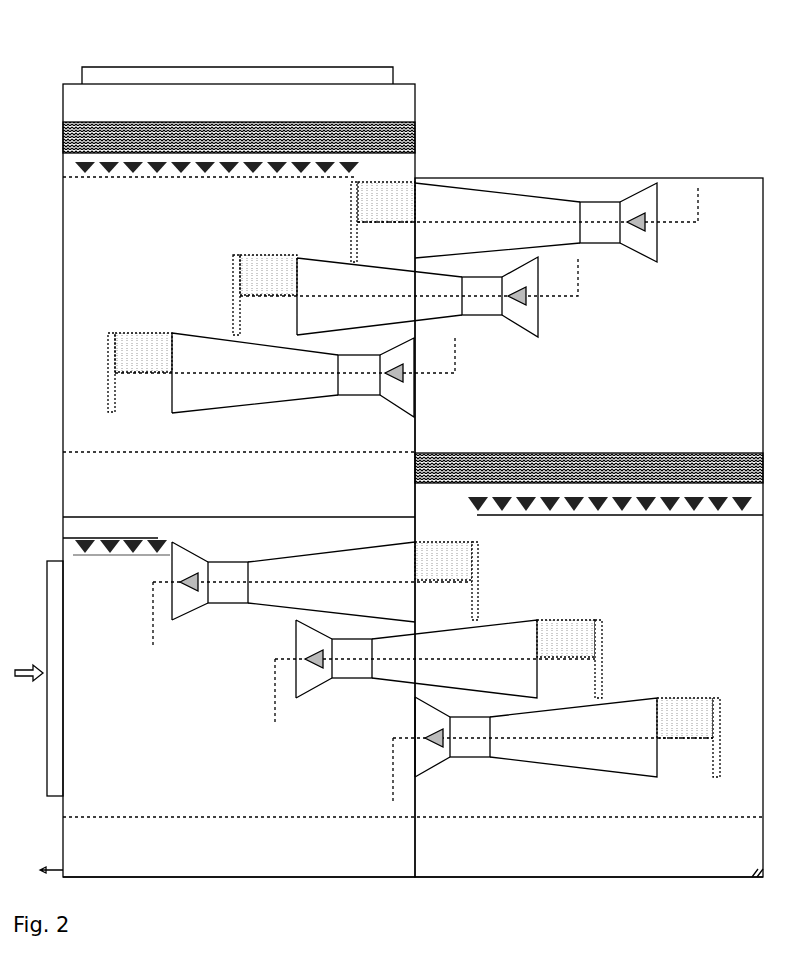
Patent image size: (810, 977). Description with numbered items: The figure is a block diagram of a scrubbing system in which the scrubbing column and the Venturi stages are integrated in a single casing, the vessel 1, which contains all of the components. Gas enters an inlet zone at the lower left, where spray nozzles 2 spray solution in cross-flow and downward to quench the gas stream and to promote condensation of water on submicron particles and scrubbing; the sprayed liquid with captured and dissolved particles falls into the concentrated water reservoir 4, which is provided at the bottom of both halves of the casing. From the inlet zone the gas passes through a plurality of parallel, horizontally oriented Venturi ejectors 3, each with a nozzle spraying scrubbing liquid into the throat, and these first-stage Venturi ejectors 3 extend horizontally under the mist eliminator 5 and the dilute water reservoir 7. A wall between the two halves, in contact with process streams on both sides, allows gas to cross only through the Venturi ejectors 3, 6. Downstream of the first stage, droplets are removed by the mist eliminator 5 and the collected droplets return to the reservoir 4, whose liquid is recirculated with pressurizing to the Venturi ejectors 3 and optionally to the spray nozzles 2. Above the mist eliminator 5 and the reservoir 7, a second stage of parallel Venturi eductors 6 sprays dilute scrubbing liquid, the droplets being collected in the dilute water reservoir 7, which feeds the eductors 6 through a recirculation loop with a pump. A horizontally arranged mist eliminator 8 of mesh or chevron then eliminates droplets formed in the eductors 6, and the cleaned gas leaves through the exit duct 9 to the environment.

The vessel 1 is at (413, 480).
The spray nozzles 2 is at (92, 705).
The Venturi ejector 3 is at (436, 672).
The concentrated water reservoir 4 is at (413, 847).
The mist eliminator 5 is at (589, 471).
The second Venturi eductor 6 is at (403, 299).
The dilute water reservoir 7 is at (239, 484).
The mist eliminator 8 is at (239, 138).
The exit duct 9 is at (237, 49).